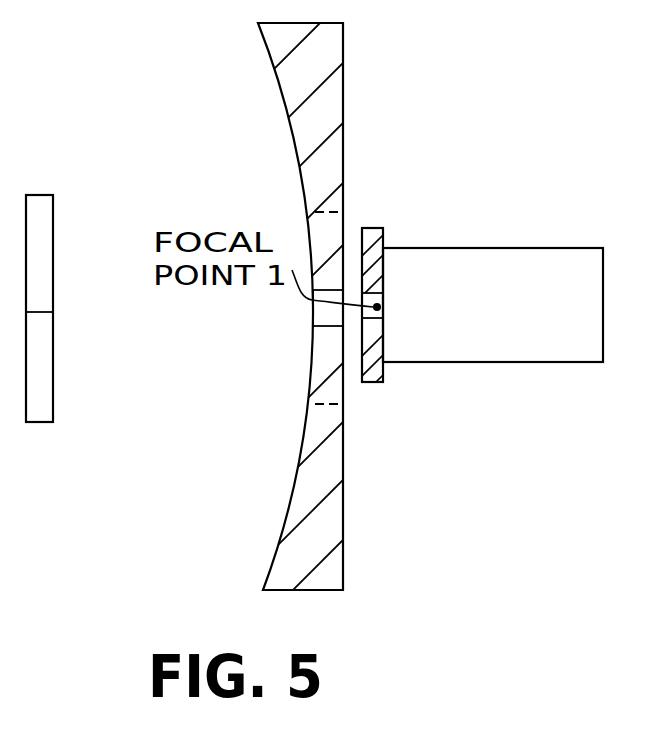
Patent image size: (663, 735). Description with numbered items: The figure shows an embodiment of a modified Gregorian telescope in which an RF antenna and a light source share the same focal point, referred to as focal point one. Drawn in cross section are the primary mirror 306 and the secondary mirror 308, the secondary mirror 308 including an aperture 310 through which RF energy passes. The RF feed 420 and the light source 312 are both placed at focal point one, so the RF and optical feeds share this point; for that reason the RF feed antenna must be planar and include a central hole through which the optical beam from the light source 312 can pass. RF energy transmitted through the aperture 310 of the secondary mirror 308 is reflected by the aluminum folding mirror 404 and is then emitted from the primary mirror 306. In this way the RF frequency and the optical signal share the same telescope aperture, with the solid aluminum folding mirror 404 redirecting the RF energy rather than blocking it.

The primary mirror 306 is at (290, 121).
The secondary mirror 308 is at (310, 373).
The aperture 310 is at (318, 322).
The light source 312 is at (503, 362).
The aluminum folding mirror 404 is at (53, 402).
The RF feed 420 is at (387, 230).